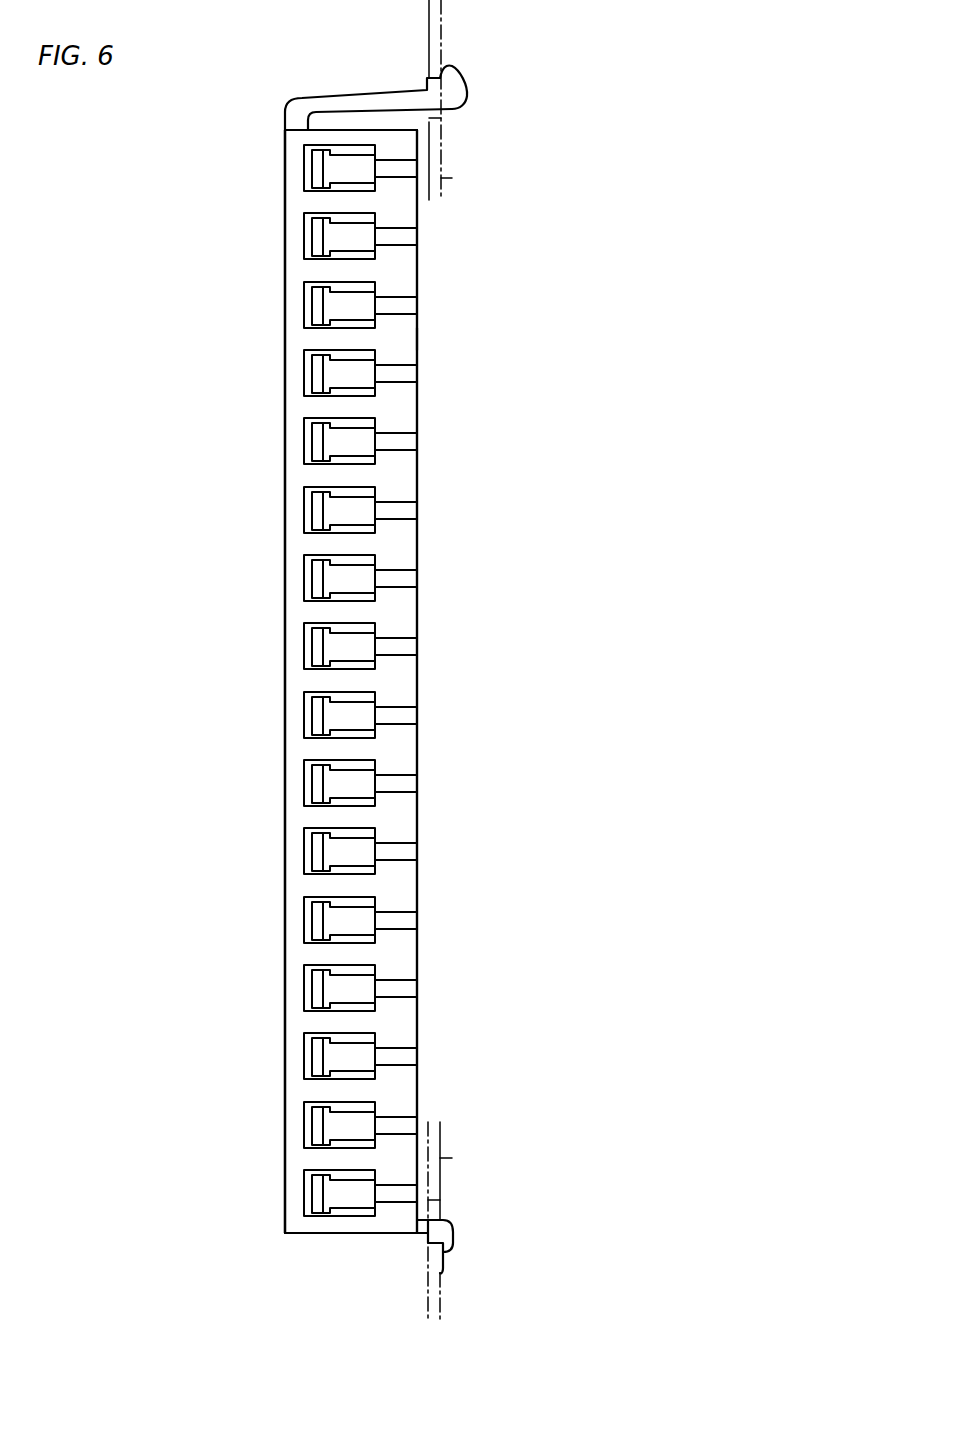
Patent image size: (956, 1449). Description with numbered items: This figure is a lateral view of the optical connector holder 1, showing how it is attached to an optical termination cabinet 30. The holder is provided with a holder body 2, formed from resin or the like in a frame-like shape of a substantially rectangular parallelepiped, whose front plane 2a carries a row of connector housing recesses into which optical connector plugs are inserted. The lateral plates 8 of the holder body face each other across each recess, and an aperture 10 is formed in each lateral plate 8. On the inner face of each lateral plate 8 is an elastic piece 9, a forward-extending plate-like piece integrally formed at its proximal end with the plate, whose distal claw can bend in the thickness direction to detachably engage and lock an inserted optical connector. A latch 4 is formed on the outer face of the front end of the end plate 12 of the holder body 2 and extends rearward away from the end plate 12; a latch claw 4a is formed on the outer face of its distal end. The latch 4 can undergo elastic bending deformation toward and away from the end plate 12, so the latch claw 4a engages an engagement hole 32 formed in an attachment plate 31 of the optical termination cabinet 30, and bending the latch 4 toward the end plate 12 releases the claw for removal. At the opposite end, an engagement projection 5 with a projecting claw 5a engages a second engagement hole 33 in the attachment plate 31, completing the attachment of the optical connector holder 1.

The optical connector holder 1 is at (490, 122).
The holder body 2 is at (417, 260).
The front plane 2a is at (285, 198).
The latch 4 is at (377, 92).
The latch claw 4a is at (447, 65).
The engagement projection 5 is at (453, 1233).
The projecting claw 5a is at (440, 1272).
The lateral plate 8 is at (400, 337).
The elastic piece 9 is at (340, 238).
The aperture 10 is at (340, 307).
The end plate 12 is at (358, 130).
The optical termination cabinet 30 is at (456, 33).
The attachment plate 31 is at (442, 178).
The engagement hole 32 is at (442, 118).
The engagement hole 33 is at (437, 1207).